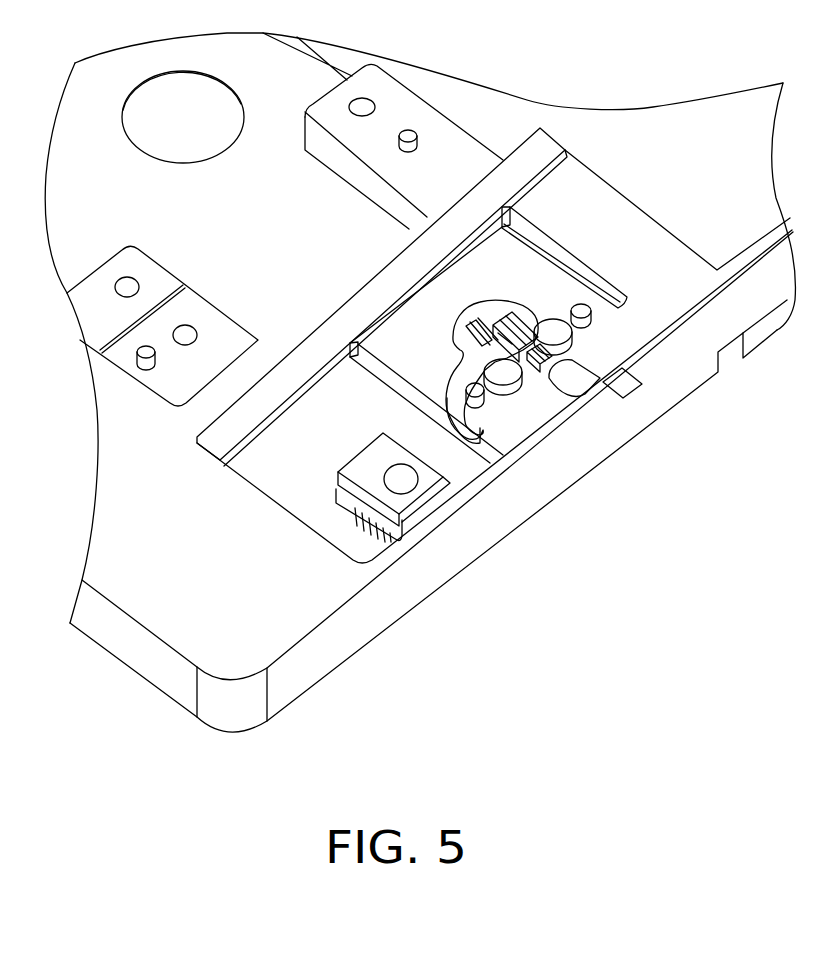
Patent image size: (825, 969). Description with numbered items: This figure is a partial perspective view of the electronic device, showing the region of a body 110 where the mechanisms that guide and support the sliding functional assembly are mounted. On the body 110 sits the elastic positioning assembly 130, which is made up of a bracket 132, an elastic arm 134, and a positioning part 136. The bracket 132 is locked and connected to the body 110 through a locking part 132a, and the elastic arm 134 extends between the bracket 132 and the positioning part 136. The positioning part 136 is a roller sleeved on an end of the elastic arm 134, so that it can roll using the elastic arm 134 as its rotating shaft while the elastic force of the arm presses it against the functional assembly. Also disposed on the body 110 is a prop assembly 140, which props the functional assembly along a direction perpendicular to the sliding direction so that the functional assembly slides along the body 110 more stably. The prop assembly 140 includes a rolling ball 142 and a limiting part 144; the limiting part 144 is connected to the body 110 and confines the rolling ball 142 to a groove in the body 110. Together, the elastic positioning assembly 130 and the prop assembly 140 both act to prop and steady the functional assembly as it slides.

The body 110 is at (317, 662).
The elastic positioning assembly 130 is at (507, 392).
The bracket 132 is at (522, 403).
The locking part 132a is at (551, 325).
The elastic arm 134 is at (592, 377).
The positioning part 136 is at (647, 387).
The prop assembly 140 is at (448, 551).
The rolling ball 142 is at (408, 481).
The limiting part 144 is at (432, 478).